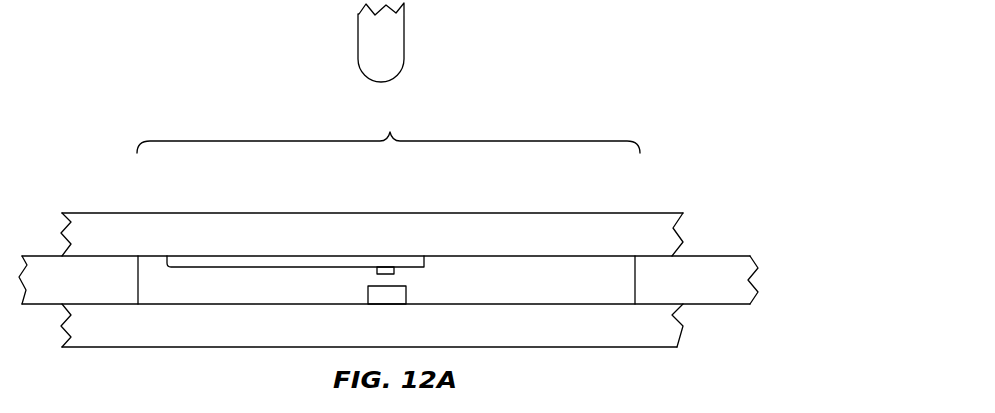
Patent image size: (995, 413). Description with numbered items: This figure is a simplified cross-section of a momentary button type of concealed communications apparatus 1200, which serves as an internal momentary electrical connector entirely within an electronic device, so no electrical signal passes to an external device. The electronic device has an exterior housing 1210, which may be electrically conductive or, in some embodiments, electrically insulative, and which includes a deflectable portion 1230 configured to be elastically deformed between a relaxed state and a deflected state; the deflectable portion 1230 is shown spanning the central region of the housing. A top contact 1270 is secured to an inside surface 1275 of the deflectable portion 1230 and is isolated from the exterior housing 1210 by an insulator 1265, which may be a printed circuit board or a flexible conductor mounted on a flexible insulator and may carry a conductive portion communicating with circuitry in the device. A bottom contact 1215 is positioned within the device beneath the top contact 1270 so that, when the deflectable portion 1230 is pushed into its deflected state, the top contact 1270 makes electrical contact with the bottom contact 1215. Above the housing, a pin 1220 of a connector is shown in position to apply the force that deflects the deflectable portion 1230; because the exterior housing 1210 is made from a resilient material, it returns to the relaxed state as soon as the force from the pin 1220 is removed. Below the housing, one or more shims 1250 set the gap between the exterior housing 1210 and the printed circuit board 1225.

The concealed communications apparatus 1200 is at (618, 64).
The exterior housing 1210 is at (652, 232).
The bottom contact 1215 is at (390, 296).
The pin 1220 is at (388, 28).
The printed circuit board 1225 is at (645, 326).
The deflectable portion 1230 is at (388, 126).
The shims 1250 is at (707, 287).
The insulator 1265 is at (217, 260).
The top contact 1270 is at (378, 268).
The inside surface 1275 is at (440, 260).